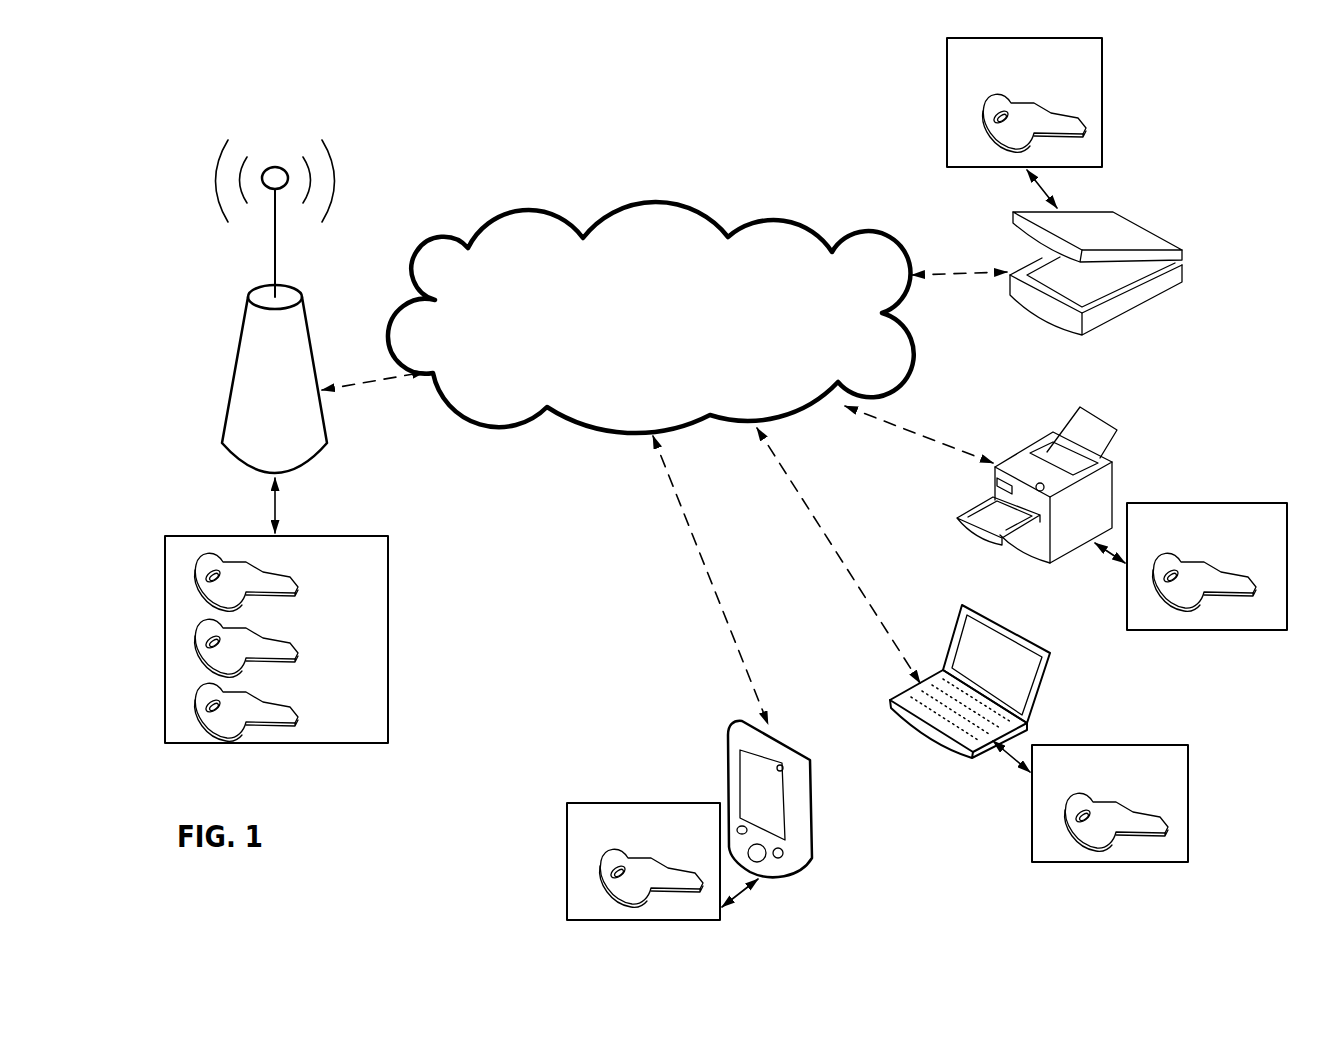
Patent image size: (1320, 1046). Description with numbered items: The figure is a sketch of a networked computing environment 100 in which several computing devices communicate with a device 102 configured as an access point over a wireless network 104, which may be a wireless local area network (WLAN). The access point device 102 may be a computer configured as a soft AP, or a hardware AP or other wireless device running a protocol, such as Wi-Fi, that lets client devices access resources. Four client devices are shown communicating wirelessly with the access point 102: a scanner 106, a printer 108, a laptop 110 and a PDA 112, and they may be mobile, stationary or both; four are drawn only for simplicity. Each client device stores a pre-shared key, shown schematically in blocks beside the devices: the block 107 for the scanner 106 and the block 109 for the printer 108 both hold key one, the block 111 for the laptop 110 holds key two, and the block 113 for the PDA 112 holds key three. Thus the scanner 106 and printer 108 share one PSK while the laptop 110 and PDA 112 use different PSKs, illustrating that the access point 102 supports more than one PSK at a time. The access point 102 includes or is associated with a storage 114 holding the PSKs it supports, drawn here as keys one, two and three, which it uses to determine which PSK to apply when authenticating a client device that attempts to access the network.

The networked computing environment 100 is at (166, 163).
The access point device 102 is at (230, 383).
The wireless network 104 is at (802, 224).
The scanner 106 is at (1170, 238).
The PSK block of scanner 107 is at (1102, 90).
The printer 108 is at (1113, 480).
The PSK block of printer 109 is at (1198, 500).
The laptop 110 is at (1043, 686).
The PSK block of laptop 111 is at (1108, 745).
The PDA 112 is at (813, 810).
The PSK block of PDA 113 is at (600, 800).
The storage 114 is at (165, 642).